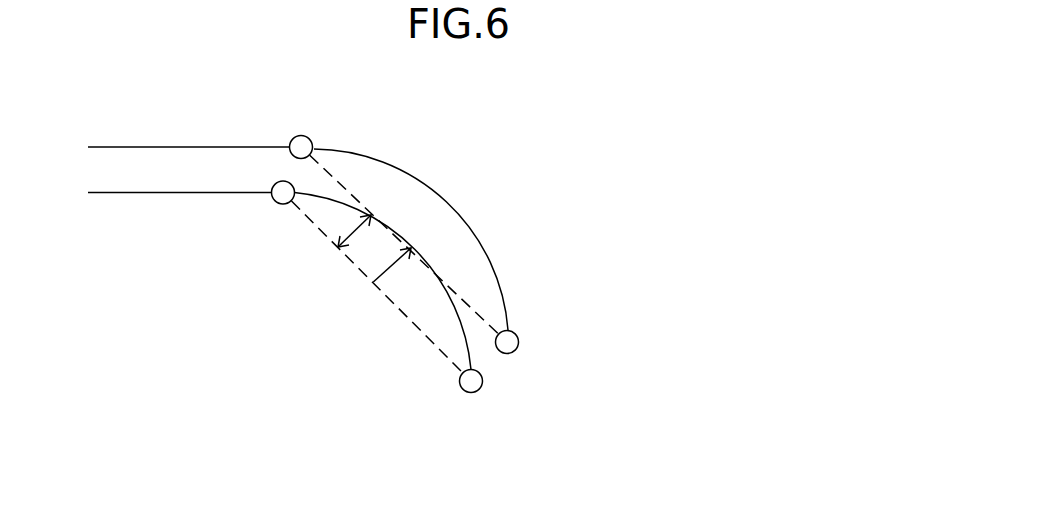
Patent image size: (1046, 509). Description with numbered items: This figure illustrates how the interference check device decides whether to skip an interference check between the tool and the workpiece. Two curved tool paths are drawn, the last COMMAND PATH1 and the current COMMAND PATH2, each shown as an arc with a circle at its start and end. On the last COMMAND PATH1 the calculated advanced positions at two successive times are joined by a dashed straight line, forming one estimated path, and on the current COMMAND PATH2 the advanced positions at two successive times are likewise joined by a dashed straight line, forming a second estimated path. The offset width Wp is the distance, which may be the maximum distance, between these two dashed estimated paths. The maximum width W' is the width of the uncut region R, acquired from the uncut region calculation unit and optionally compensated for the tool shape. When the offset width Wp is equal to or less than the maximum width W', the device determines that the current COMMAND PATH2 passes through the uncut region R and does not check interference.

The last command path COMMAND PATH1 is at (483, 381).
The current command path COMMAND PATH2 is at (519, 342).
The offset width Wp is at (351, 238).
The maximum width W' is at (388, 314).
The uncut region R is at (360, 255).